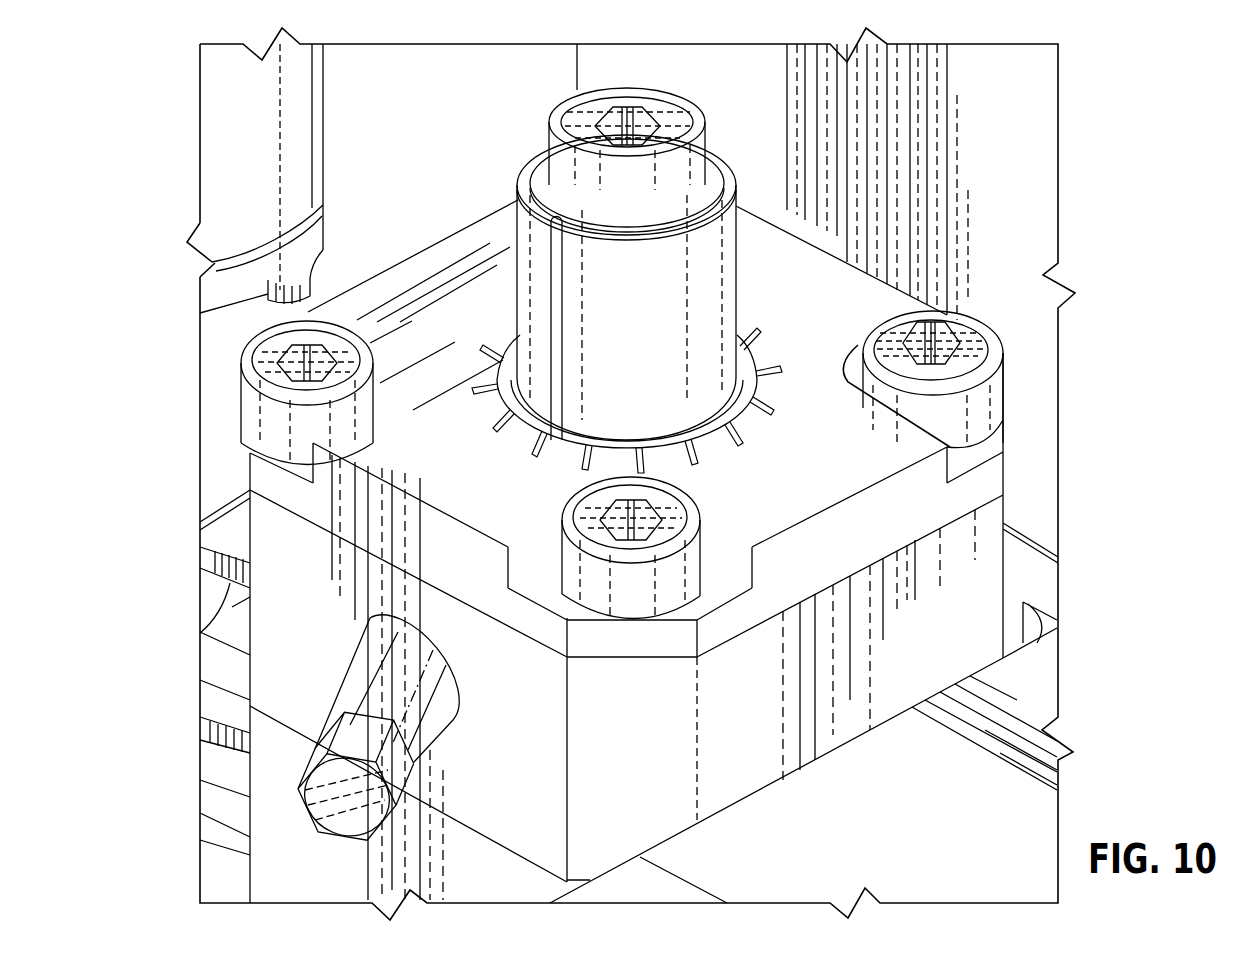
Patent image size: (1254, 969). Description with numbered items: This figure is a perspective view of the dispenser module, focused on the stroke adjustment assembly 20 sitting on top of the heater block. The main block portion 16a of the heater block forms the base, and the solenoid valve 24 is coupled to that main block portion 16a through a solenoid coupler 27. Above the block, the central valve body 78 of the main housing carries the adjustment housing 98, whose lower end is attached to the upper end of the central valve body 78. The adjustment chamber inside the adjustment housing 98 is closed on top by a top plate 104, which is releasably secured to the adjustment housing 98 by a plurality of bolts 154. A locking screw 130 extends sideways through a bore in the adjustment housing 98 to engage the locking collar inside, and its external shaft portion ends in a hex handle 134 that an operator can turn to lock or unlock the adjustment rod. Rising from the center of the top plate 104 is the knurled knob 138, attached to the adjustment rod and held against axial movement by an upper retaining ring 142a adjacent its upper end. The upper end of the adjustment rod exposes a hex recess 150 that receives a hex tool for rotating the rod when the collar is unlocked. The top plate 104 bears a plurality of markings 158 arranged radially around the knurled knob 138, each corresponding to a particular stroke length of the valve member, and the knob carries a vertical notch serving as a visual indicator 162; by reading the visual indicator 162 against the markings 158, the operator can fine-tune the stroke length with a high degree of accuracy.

The main block portion 16a is at (890, 848).
The stroke adjustment assembly 20 is at (713, 273).
The solenoid valve 24 is at (223, 170).
The solenoid coupler 27 is at (218, 703).
The central valve body 78 is at (313, 707).
The adjustment housing 98 is at (860, 582).
The top plate 104 is at (843, 481).
The locking screw 130 is at (382, 678).
The hex handle 134 is at (345, 803).
The knurled knob 138 is at (642, 331).
The upper retaining ring 142a is at (723, 175).
The hex recess 150 is at (628, 105).
The bolts 154 is at (237, 350).
The markings 158 is at (472, 352).
The visual indicator 162 is at (548, 243).